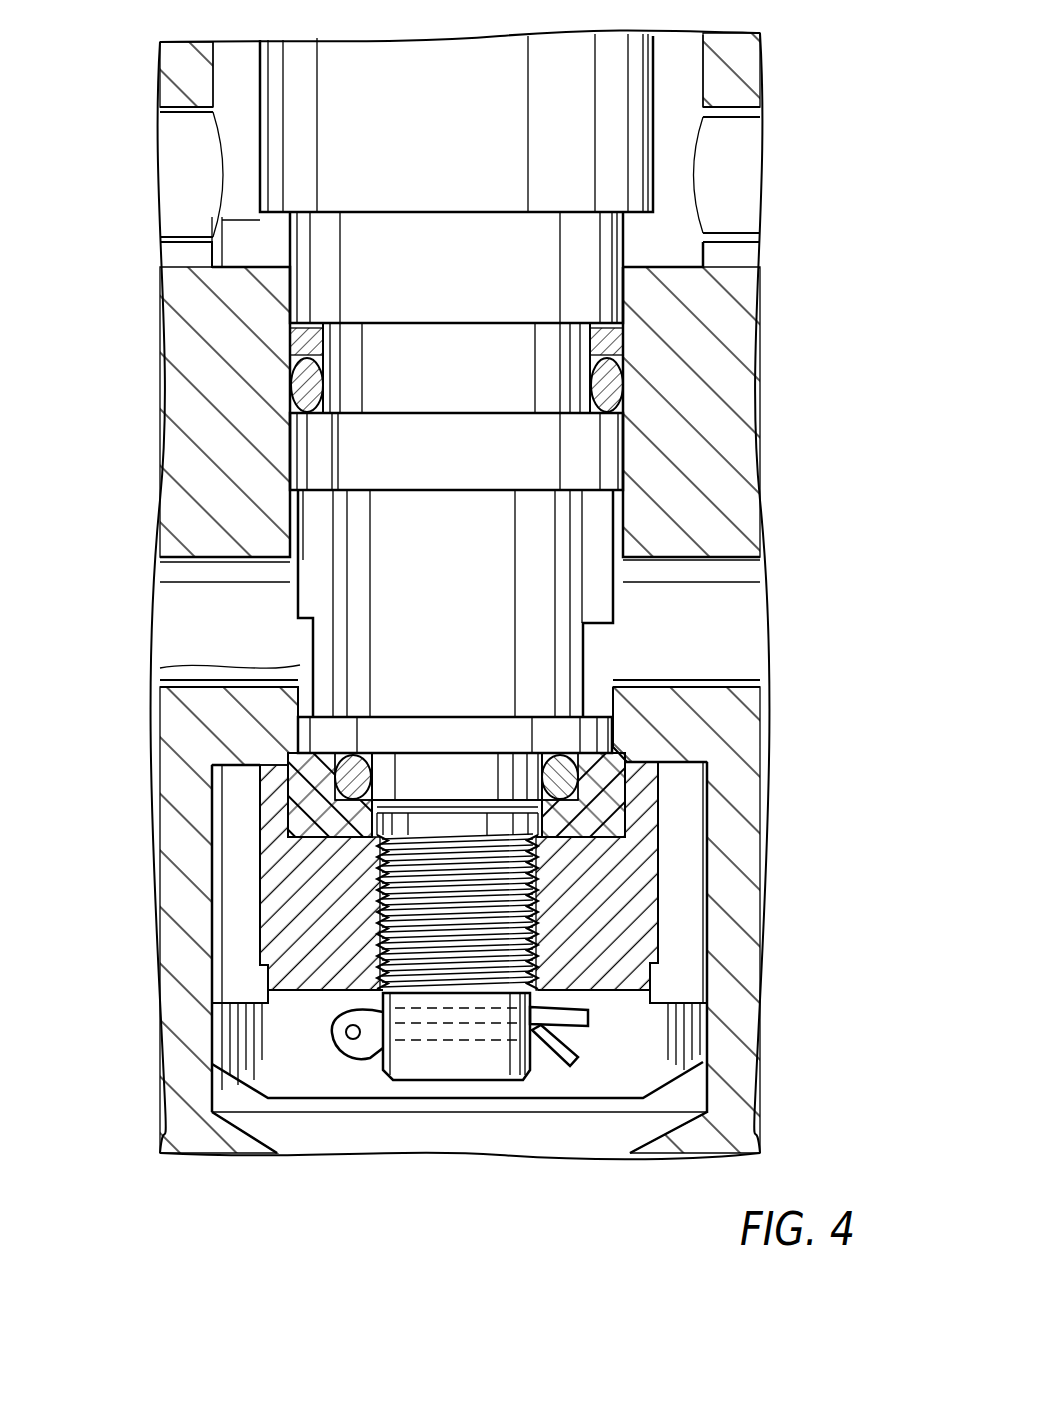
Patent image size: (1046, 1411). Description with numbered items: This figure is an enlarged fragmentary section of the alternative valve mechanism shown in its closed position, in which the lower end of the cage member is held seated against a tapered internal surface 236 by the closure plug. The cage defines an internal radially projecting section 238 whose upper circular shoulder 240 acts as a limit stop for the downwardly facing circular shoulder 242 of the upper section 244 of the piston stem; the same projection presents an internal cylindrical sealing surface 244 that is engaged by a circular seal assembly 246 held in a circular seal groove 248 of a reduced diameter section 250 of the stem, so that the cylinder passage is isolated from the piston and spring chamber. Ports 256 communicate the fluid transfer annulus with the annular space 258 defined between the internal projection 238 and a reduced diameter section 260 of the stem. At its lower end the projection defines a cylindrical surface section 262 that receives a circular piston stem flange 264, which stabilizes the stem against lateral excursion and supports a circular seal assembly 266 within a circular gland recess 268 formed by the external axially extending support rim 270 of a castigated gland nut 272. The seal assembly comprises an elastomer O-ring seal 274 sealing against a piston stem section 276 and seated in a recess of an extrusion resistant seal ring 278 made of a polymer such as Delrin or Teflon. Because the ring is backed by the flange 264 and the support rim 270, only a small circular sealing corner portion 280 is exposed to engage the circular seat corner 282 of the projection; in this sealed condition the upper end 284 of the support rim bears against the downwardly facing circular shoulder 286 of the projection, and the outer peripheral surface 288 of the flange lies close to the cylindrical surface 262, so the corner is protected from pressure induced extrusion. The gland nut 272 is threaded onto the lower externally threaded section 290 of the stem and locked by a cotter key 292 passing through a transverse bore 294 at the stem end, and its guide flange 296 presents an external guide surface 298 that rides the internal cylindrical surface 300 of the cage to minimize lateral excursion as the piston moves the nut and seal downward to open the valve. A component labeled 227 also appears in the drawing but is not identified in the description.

The retaining ring 227 is at (175, 133).
The tapered internal surface 236 is at (240, 1128).
The internal radially projecting section 238 is at (700, 438).
The upper circular shoulder 240 is at (225, 258).
The downwardly facing circular shoulder 242 is at (222, 220).
The upper section of piston stem 244 is at (290, 518).
The circular seal assembly 246 is at (290, 360).
The circular seal groove 248 is at (625, 357).
The reduced diameter section of piston stem 250 is at (632, 216).
The ports 256 is at (180, 612).
The annular space 258 is at (595, 655).
The reduced diameter section of piston stem 260 is at (590, 520).
The cylindrical surface section 262 is at (300, 667).
The circular piston stem flange 264 is at (300, 742).
The circular seal assembly 266 is at (325, 832).
The circular gland recess 268 is at (593, 823).
The external axially extending support rim 270 is at (650, 793).
The castigated gland nut 272 is at (640, 905).
The elastomer O-ring seal 274 is at (352, 757).
The piston stem section 276 is at (470, 770).
The extrusion resistant seal ring 278 is at (330, 858).
The circular sealing corner portion 280 is at (620, 745).
The circular seat corner 282 is at (298, 777).
The upper end of support rim 284 is at (633, 758).
The downwardly facing circular shoulder 286 is at (672, 765).
The outer peripheral surface of support flange 288 is at (612, 732).
The lower externally threaded section 290 is at (400, 930).
The cotter key 292 is at (352, 1045).
The transverse bore 294 is at (450, 1033).
The guide flange 296 is at (650, 1053).
The external guide surface 298 is at (700, 1007).
The internal cylindrical surface 300 is at (220, 1030).